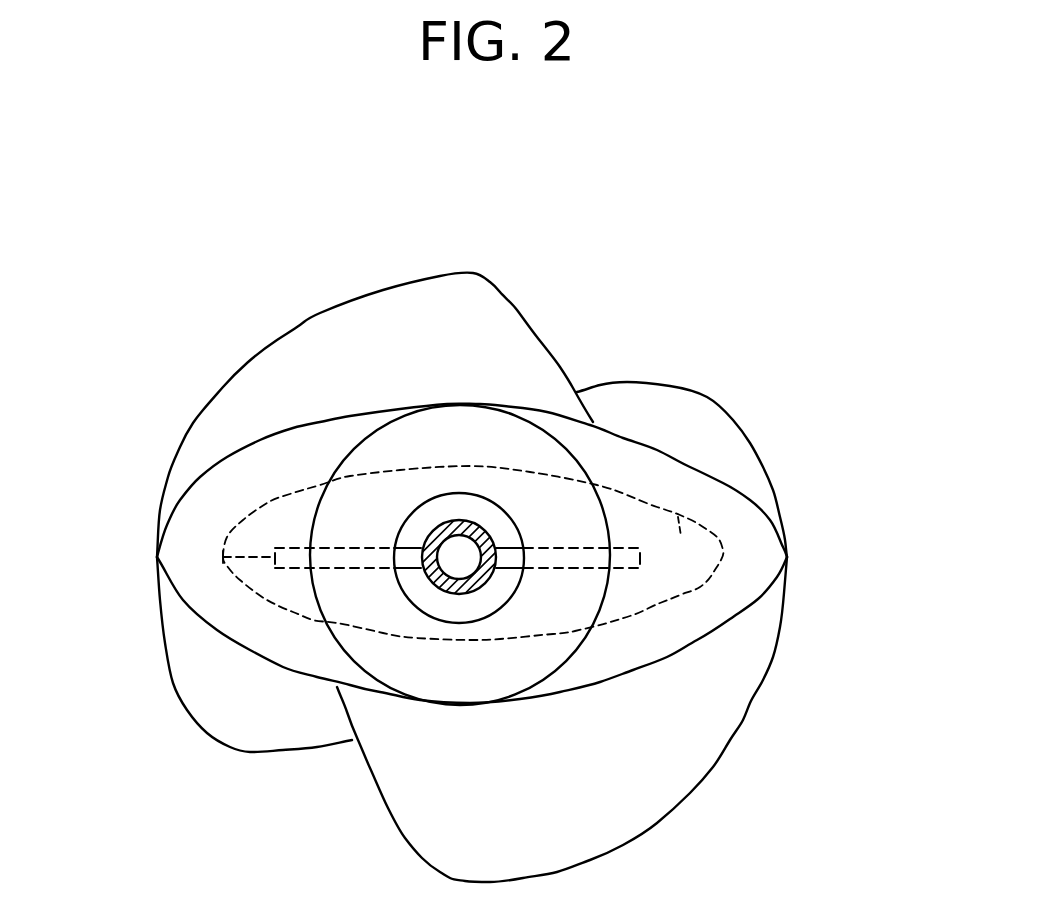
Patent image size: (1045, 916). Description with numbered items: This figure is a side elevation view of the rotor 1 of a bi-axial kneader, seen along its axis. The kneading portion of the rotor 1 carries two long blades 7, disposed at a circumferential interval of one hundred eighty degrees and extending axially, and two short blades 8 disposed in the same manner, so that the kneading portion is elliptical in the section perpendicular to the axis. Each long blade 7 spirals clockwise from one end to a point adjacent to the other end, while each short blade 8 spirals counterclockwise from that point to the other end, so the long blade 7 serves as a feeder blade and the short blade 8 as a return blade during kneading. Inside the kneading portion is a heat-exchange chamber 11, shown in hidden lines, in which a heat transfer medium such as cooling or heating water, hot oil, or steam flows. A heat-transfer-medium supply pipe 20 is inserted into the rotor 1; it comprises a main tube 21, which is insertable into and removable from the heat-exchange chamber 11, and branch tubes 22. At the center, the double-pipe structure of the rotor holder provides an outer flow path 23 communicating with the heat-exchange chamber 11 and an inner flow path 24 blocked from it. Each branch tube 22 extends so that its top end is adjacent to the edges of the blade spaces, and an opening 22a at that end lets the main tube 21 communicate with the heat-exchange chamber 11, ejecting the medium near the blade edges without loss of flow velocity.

The rotor 1 is at (806, 557).
The long blade 7 is at (200, 417).
The short blade 8 is at (708, 394).
The heat-exchange chamber 11 is at (683, 515).
The heat-transfer-medium supply pipe 20 is at (420, 700).
The main tube 21 is at (452, 590).
The branch tube 22 is at (335, 563).
The opening 22a is at (222, 557).
The outer flow path 23 is at (460, 508).
The inner flow path 24 is at (468, 550).